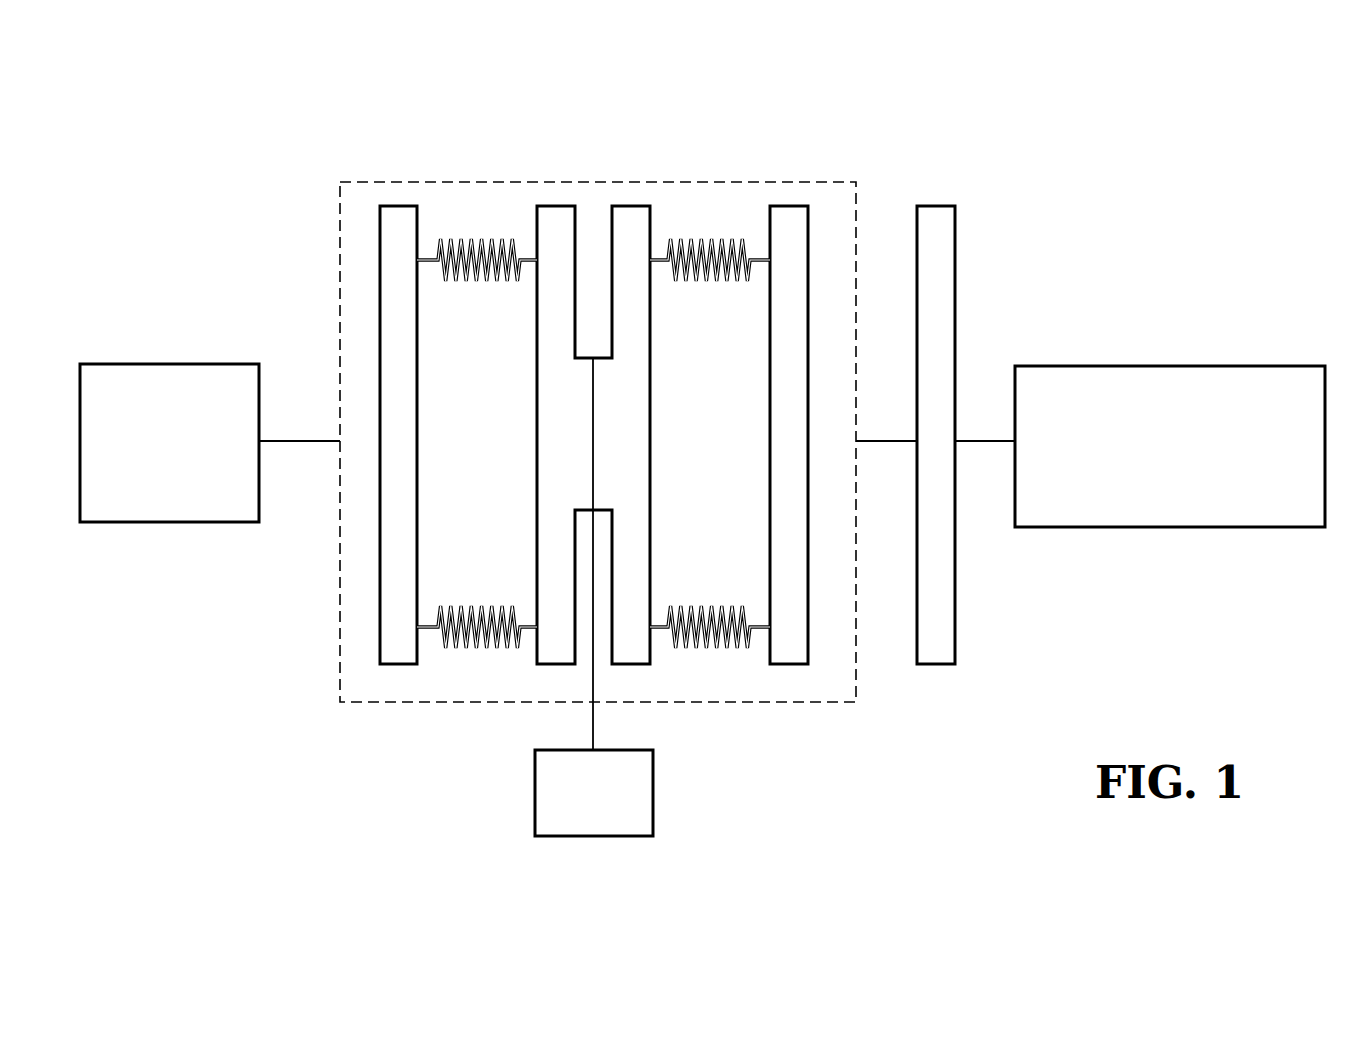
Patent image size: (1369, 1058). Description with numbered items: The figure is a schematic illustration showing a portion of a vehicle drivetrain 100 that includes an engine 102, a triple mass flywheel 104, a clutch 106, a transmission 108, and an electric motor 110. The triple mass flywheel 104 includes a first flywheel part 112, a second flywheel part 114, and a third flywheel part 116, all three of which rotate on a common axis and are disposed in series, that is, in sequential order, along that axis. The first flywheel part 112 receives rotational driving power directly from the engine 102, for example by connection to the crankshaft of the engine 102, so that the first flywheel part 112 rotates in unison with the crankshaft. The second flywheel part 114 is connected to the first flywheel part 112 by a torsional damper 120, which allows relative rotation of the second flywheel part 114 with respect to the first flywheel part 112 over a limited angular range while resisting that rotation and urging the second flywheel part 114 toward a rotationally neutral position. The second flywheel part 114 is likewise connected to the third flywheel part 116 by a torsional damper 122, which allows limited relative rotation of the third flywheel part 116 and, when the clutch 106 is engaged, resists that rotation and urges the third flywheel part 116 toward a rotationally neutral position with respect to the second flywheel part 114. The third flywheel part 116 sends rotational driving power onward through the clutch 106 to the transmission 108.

The vehicle drivetrain 100 is at (1072, 160).
The engine 102 is at (172, 364).
The triple mass flywheel 104 is at (826, 178).
The clutch 106 is at (934, 206).
The transmission 108 is at (1211, 366).
The electric motor 110 is at (653, 804).
The first flywheel part 112 is at (399, 206).
The second flywheel part 114 is at (557, 206).
The third flywheel part 116 is at (790, 664).
The torsional damper 120 is at (462, 282).
The torsional damper 122 is at (697, 282).